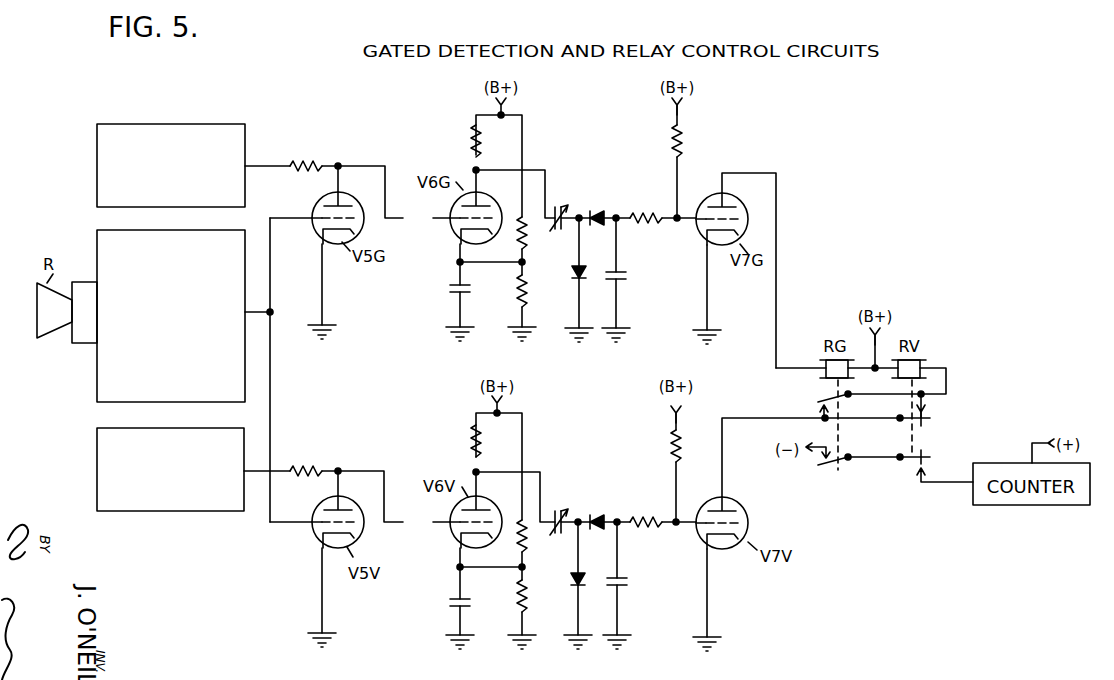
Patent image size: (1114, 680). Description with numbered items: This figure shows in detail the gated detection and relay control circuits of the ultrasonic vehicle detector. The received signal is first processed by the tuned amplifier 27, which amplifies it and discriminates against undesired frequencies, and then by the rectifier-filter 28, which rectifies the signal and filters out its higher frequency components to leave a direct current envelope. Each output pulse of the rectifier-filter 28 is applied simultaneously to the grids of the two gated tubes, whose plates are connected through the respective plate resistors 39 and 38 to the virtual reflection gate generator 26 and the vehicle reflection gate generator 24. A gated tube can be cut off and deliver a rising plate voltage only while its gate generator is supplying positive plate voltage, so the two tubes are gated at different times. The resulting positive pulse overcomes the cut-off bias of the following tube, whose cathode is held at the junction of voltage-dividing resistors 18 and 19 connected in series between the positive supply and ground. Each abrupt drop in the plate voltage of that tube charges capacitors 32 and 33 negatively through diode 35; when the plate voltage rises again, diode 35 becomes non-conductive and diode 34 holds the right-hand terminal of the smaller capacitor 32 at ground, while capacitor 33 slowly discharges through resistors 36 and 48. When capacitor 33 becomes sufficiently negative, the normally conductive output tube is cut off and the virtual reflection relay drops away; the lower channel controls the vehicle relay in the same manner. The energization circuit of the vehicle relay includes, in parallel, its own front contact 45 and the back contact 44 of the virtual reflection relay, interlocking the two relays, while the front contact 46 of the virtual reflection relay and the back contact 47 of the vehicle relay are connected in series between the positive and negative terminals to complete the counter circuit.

The voltage-dividing resistor 18 is at (517, 243).
The voltage-dividing resistor 19 is at (517, 300).
The vehicle reflection gate generator 24 is at (197, 512).
The virtual reflection gate generator 26 is at (224, 125).
The tuned amplifier 27 is at (171, 316).
The rectifier-filter 28 is at (167, 337).
The capacitor 32 is at (562, 210).
The capacitor 33 is at (623, 275).
The diode 34 is at (572, 267).
The diode 35 is at (600, 210).
The resistor 36 is at (646, 212).
The plate resistor 38 is at (307, 467).
The plate resistor 39 is at (307, 164).
The back contact of relay RG 44 is at (824, 396).
The front contact of relay RV 45 is at (925, 422).
The front contact of relay RG 46 is at (836, 467).
The back contact of relay RV 47 is at (908, 465).
The resistor 48 is at (685, 145).